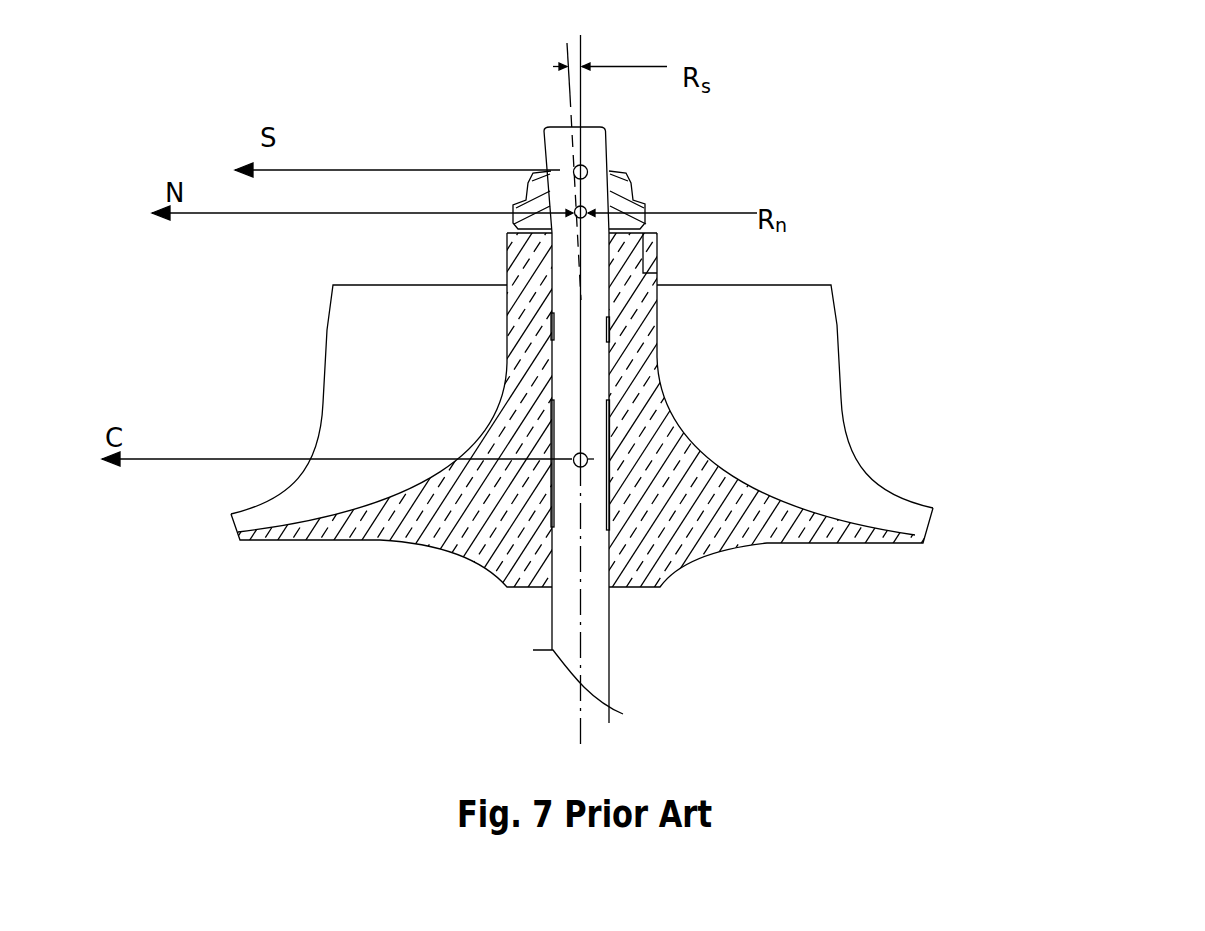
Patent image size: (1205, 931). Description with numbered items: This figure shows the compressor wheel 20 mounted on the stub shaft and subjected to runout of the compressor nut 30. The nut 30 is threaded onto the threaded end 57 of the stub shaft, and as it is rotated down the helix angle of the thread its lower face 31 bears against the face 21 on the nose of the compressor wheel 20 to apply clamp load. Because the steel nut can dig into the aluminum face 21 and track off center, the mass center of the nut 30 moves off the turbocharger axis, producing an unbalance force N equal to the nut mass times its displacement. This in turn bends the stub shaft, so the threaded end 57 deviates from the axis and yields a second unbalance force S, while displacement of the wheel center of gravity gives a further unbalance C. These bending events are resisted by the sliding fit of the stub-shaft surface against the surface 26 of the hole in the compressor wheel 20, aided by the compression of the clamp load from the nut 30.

The compressor wheel 20 is at (765, 385).
The face on the nose of the compressor wheel 21 is at (510, 245).
The surface of the hole in the compressor wheel 26 is at (610, 530).
The compressor nut 30 is at (618, 195).
The lower face of the nut 31 is at (658, 257).
The threaded end of the stub-shaft 57 is at (597, 148).